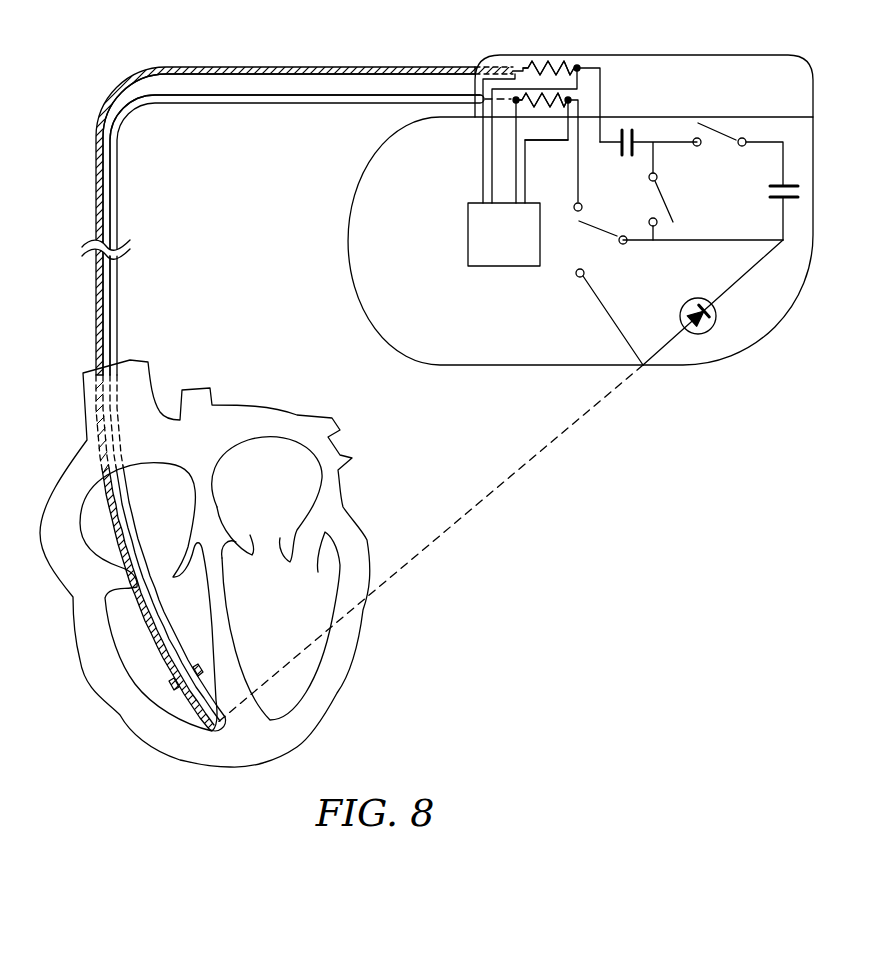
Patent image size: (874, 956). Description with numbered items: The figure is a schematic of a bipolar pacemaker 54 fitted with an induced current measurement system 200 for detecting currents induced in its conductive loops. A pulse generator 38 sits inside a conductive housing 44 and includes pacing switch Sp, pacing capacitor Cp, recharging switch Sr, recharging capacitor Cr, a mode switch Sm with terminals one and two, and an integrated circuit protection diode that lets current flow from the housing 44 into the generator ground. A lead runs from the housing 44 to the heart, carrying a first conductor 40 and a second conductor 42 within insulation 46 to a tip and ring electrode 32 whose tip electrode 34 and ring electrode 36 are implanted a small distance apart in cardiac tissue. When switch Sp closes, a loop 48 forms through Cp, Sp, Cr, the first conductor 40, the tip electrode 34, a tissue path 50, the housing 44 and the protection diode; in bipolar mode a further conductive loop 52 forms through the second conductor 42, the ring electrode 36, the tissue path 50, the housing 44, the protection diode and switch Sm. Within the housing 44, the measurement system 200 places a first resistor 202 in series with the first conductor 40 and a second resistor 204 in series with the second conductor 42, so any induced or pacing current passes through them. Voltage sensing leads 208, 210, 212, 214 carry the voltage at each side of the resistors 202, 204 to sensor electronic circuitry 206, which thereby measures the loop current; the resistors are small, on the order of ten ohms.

The tip and ring electrode 32 is at (158, 709).
The tip electrode 34 is at (180, 685).
The ring electrode 36 is at (215, 726).
The pulse generator 38 is at (800, 149).
The first conductor 40 is at (418, 387).
The second conductor 42 is at (376, 407).
The housing 44 is at (757, 337).
The insulation 46 is at (120, 95).
The loop 48 is at (165, 66).
The tissue path 50 is at (505, 481).
The conductive loop 52 is at (178, 106).
The bipolar pacemaker 54 is at (587, 537).
The induced current measurement system 200 is at (545, 215).
The first resistor 202 is at (542, 64).
The second resistor 204 is at (548, 99).
The sensor electronic circuitry 206 is at (467, 233).
The voltage sensing lead 208 is at (482, 135).
The voltage sensing lead 210 is at (491, 162).
The voltage sensing lead 212 is at (524, 190).
The voltage sensing lead 214 is at (560, 142).